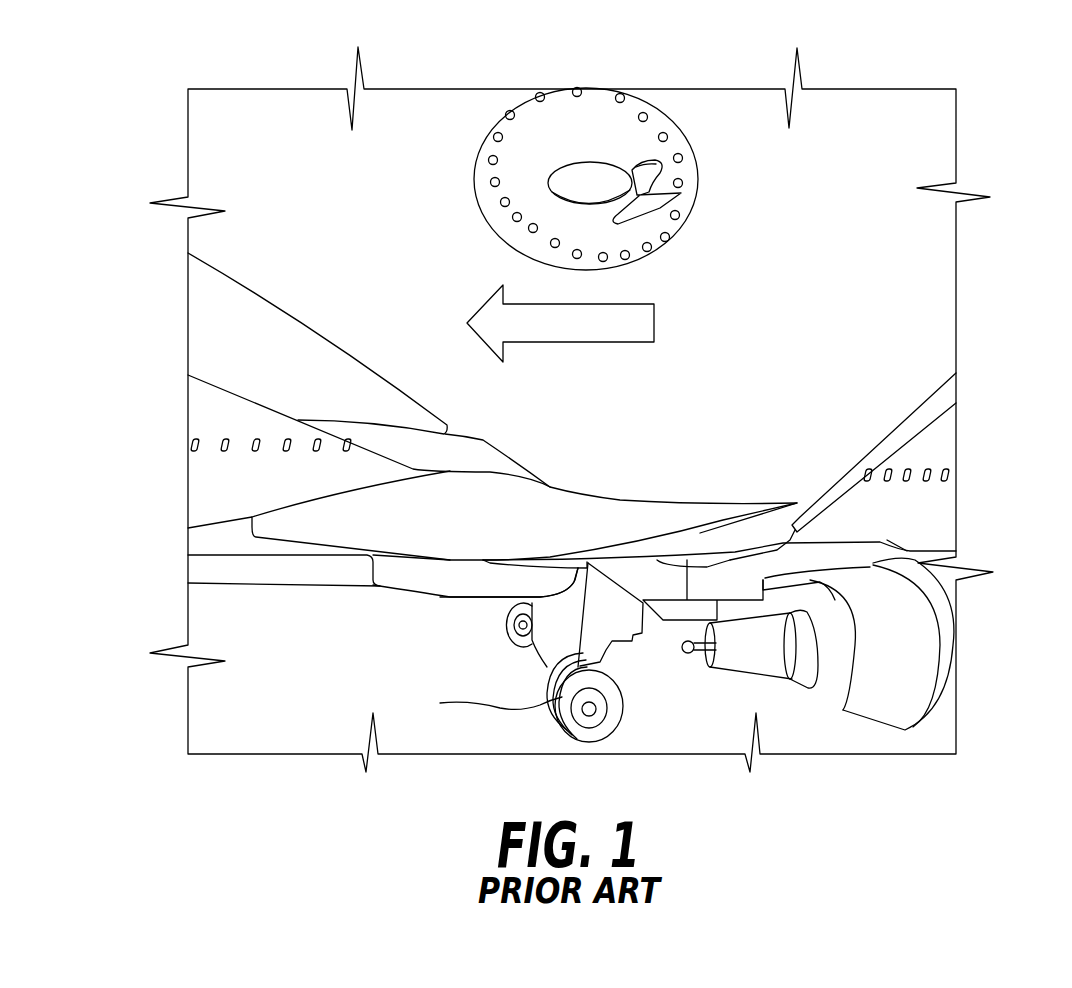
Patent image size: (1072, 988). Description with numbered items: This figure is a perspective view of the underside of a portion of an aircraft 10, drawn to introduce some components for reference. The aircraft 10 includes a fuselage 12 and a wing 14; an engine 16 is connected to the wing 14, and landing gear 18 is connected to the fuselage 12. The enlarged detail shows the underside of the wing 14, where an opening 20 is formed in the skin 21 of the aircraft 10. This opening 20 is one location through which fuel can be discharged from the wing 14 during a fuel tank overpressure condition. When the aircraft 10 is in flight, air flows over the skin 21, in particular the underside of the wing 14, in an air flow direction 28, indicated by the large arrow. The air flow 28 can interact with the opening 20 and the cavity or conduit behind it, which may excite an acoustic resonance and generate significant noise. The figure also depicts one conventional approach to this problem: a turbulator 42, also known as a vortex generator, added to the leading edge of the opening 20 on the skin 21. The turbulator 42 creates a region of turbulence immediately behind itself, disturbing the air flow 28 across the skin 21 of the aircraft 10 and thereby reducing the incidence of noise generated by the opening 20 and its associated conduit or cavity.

The aircraft 10 is at (988, 226).
The fuselage 12 is at (945, 512).
The wing 14 is at (938, 313).
The engine 16 is at (950, 597).
The landing gear 18 is at (562, 697).
The opening 20 is at (561, 186).
The skin 21 is at (706, 281).
The air flow direction 28 is at (637, 342).
The turbulator 42 is at (670, 195).